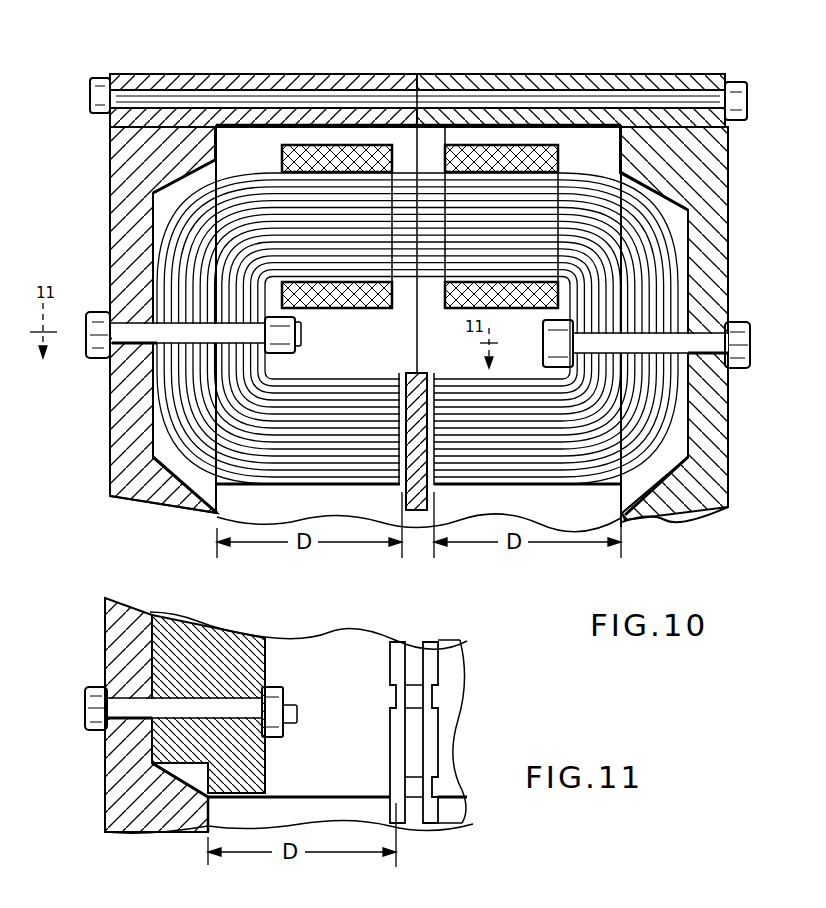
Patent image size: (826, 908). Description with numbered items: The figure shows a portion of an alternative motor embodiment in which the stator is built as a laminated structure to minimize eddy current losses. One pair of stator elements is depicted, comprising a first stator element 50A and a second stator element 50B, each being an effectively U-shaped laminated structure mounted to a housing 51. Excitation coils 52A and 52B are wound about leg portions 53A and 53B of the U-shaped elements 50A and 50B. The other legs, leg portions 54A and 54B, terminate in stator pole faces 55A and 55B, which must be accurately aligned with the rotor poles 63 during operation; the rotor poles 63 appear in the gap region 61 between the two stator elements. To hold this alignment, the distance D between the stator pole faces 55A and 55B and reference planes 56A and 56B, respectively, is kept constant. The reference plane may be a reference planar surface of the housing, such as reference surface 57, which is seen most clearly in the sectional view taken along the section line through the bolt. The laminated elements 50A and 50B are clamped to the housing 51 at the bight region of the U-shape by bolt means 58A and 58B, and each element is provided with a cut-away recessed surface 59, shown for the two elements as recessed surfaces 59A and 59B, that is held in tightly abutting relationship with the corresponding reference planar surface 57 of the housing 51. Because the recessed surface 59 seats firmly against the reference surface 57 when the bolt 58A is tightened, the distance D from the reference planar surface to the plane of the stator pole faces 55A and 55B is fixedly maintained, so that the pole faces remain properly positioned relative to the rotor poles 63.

In FIG. 10, the first stator element 50A is at (252, 180).
In FIG. 10, the second stator element 50B is at (585, 178).
In FIG. 10, the housing 51 is at (710, 158).
In FIG. 10, the excitation coil 52A is at (340, 143).
In FIG. 10, the excitation coil 52B is at (492, 143).
In FIG. 10, the leg portion 53A is at (312, 205).
In FIG. 10, the leg portion 53B is at (512, 203).
In FIG. 10, the leg portion 54A is at (340, 383).
In FIG. 11, the leg portion 54A is at (330, 653).
In FIG. 10, the leg portion 54B is at (518, 457).
In FIG. 10, the stator pole face 55A is at (405, 372).
In FIG. 10, the stator pole face 55B is at (432, 372).
In FIG. 10, the reference plane 56A is at (220, 489).
In FIG. 10, the reference plane 56B is at (655, 512).
In FIG. 11, the reference planar surface 57 is at (210, 785).
In FIG. 10, the bolt means 58A is at (93, 360).
In FIG. 11, the bolt means 58A is at (123, 700).
In FIG. 10, the bolt means 58B is at (738, 368).
In FIG. 11, the cut-away recessed surface 59 is at (262, 778).
In FIG. 10, the cut-away recessed surface 59A is at (190, 221).
In FIG. 10, the cut-away recessed surface 59B is at (640, 234).
In FIG. 10, the center gap 61 is at (422, 183).
In FIG. 10, the rotor poles 63 is at (432, 500).
In FIG. 11, the rotor poles 63 is at (413, 653).